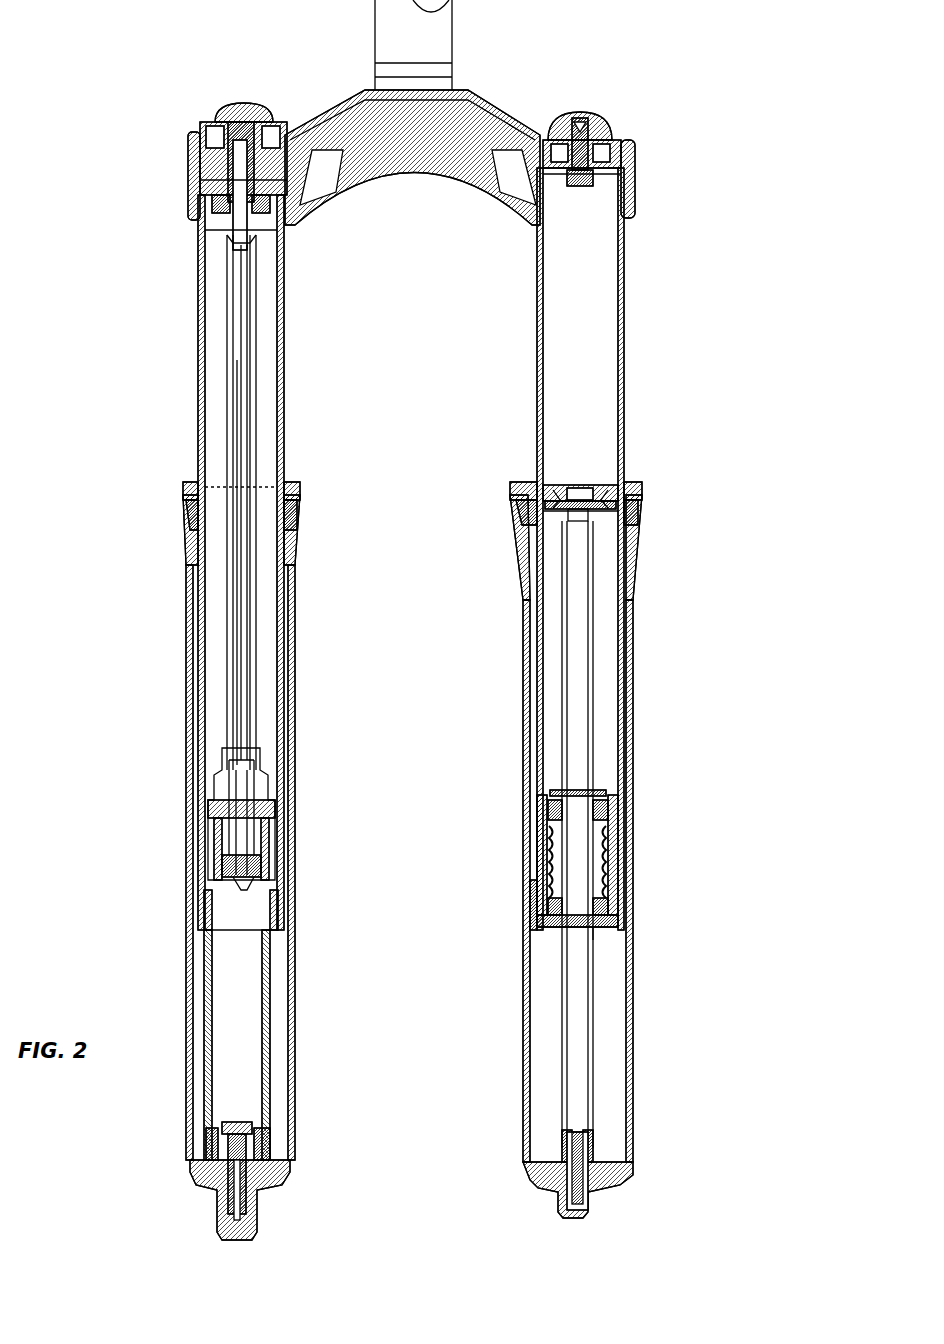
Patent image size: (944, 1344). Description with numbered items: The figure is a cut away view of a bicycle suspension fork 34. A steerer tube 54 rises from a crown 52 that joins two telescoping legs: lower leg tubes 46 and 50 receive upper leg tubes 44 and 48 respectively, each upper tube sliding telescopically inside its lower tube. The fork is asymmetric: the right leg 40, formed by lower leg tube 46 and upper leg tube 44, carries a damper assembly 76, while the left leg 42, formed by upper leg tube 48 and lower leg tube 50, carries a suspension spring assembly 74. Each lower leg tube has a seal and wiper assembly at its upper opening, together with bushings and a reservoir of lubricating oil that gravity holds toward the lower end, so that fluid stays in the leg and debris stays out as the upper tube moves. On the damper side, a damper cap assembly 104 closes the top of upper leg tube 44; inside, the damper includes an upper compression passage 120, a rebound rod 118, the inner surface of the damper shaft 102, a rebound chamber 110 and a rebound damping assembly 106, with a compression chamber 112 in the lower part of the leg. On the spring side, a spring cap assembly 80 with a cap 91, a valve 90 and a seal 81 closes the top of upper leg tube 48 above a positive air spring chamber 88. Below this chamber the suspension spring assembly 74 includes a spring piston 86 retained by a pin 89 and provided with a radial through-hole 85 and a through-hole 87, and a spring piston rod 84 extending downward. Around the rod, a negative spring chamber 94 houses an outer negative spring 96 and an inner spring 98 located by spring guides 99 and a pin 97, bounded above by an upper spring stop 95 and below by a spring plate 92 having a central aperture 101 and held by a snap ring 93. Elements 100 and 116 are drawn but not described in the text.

The suspension fork 34 is at (122, 132).
The damper cap assembly 104 is at (218, 92).
The steerer tube 54 is at (452, 22).
The crown 52 is at (486, 100).
The cap 91 is at (583, 118).
The valve 90 is at (606, 126).
The spring cap assembly 80 is at (680, 100).
The seal 81 is at (636, 150).
The upper leg tube 48 is at (625, 242).
The upper leg tube 44 is at (198, 252).
The right leg 40 is at (185, 278).
The positive air spring chamber 88 is at (594, 277).
The left leg 42 is at (647, 549).
The upper compression passage 120 is at (258, 312).
The rebound rod 118 is at (250, 358).
The suspension spring assembly 74 is at (587, 483).
The damper assembly 76 is at (240, 481).
The spring piston 86 is at (578, 488).
The pin 89 is at (603, 490).
The radial through-hole 85 is at (628, 490).
The through-hole 87 is at (582, 520).
The lower leg tube 46 is at (195, 578).
The lower leg tube 50 is at (633, 592).
The inner surface of the damper shaft 102 is at (258, 702).
The upper spring stop 95 is at (600, 792).
The outer negative spring 96 is at (615, 800).
The pin 97 is at (546, 803).
The negative spring chamber 94 is at (626, 818).
The spring guides 99 is at (549, 822).
The inner spring 98 is at (620, 838).
The rebound chamber 110 is at (262, 830).
The rebound damping assembly 106 is at (225, 839).
The spring plate 92 is at (614, 920).
The central aperture 101 is at (596, 930).
The snap ring 93 is at (547, 930).
The compression chamber 112 is at (258, 1027).
The inner tube 100 is at (270, 985).
The spring piston rod 84 is at (600, 1010).
The lower mount assembly 116 is at (231, 1171).